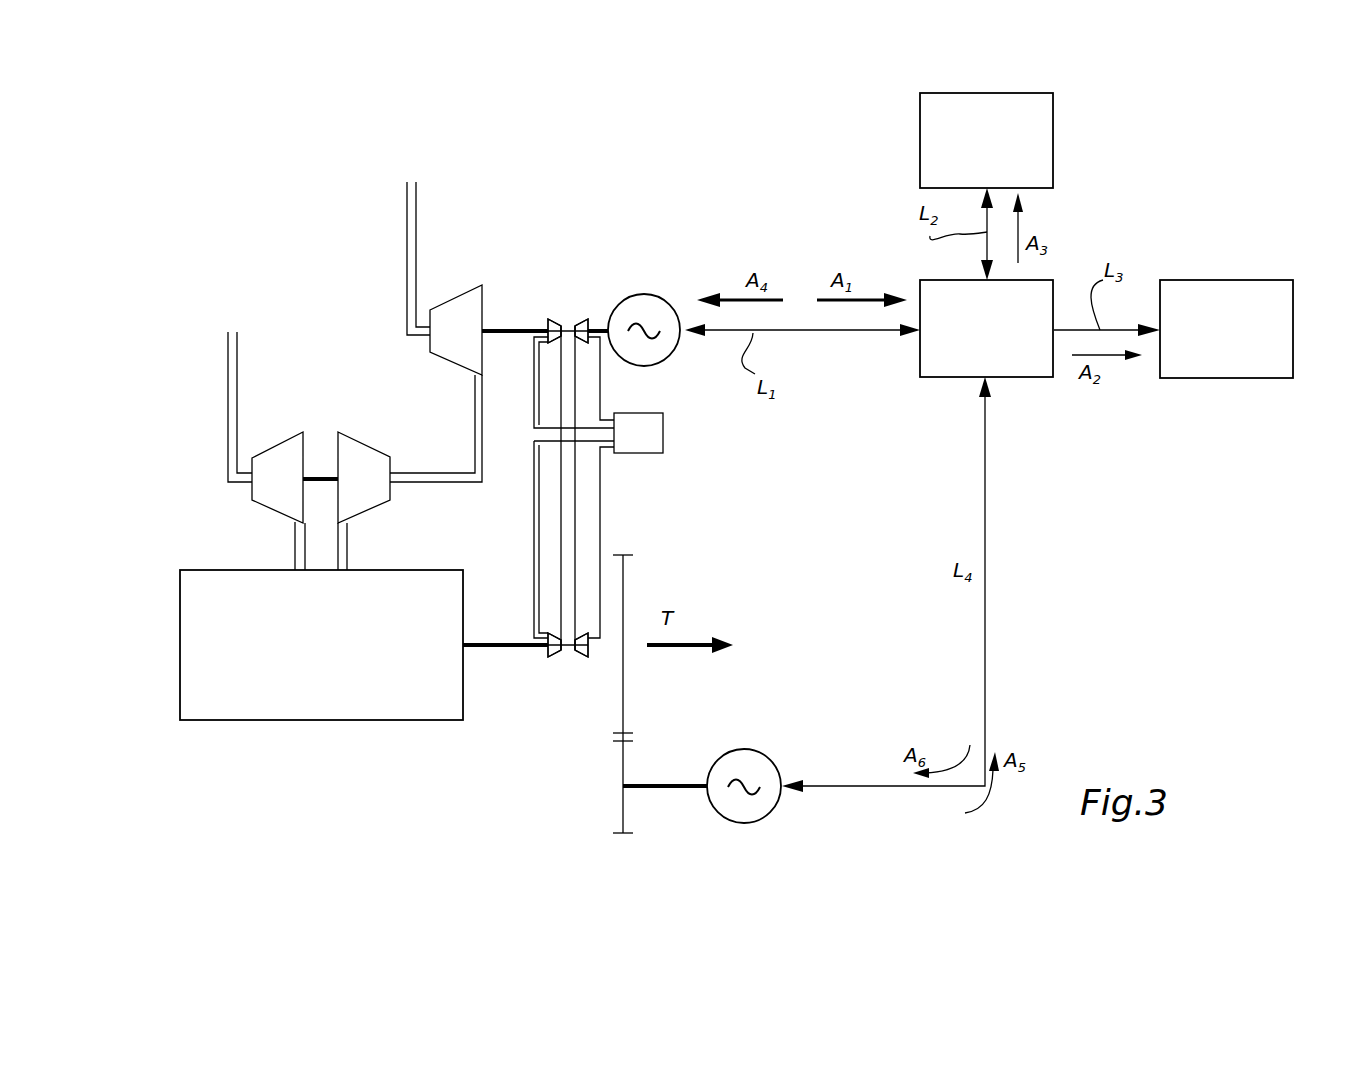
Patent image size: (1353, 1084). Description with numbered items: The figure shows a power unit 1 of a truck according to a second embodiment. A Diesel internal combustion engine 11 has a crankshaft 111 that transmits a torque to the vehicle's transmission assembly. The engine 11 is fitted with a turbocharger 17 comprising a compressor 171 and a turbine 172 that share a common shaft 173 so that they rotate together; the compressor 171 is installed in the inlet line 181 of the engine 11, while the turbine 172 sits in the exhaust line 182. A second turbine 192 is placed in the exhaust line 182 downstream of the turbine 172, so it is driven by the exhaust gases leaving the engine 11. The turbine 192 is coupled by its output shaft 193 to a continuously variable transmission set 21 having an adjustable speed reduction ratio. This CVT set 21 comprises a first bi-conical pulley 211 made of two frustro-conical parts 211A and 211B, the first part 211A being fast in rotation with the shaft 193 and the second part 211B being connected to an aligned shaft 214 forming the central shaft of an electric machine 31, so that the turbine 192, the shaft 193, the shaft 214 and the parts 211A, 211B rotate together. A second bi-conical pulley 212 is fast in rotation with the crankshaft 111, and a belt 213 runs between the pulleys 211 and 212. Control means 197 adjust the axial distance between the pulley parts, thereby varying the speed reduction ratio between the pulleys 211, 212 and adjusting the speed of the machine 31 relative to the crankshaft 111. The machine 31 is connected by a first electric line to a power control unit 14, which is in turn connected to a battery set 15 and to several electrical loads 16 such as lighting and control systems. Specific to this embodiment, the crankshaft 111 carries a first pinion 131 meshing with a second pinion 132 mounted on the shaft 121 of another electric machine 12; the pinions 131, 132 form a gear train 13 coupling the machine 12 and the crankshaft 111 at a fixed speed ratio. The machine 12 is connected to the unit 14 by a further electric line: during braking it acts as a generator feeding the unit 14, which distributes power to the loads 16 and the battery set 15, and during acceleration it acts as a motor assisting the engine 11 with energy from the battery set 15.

The power unit 1 is at (297, 307).
The Diesel internal combustion engine 11 is at (321, 645).
The crankshaft 111 is at (508, 640).
The electric machine 12 is at (742, 757).
The shaft 121 is at (670, 788).
The gear train 13 is at (559, 694).
The first pinion 131 is at (622, 705).
The second pinion 132 is at (622, 813).
The power control unit 14 is at (986, 328).
The battery set 15 is at (986, 140).
The electrical loads 16 is at (1226, 329).
The turbocharger 17 is at (241, 487).
The compressor 171 is at (278, 494).
The turbine 172 is at (365, 458).
The common shaft 173 is at (325, 483).
The inlet line 181 is at (230, 375).
The exhaust line 182 is at (480, 405).
The second turbine 192 is at (463, 310).
The output shaft 193 is at (503, 328).
The control means 197 is at (647, 440).
The continuously variable transmission set 21 is at (727, 488).
The first bi-conical pulley 211 is at (823, 427).
The first part of pulley 211A is at (588, 343).
The second part of pulley 211B is at (551, 343).
The second bi-conical pulley 212 is at (823, 557).
The belt 213 is at (568, 497).
The generator drive shaft 214 is at (597, 320).
The electric machine 31 is at (653, 303).